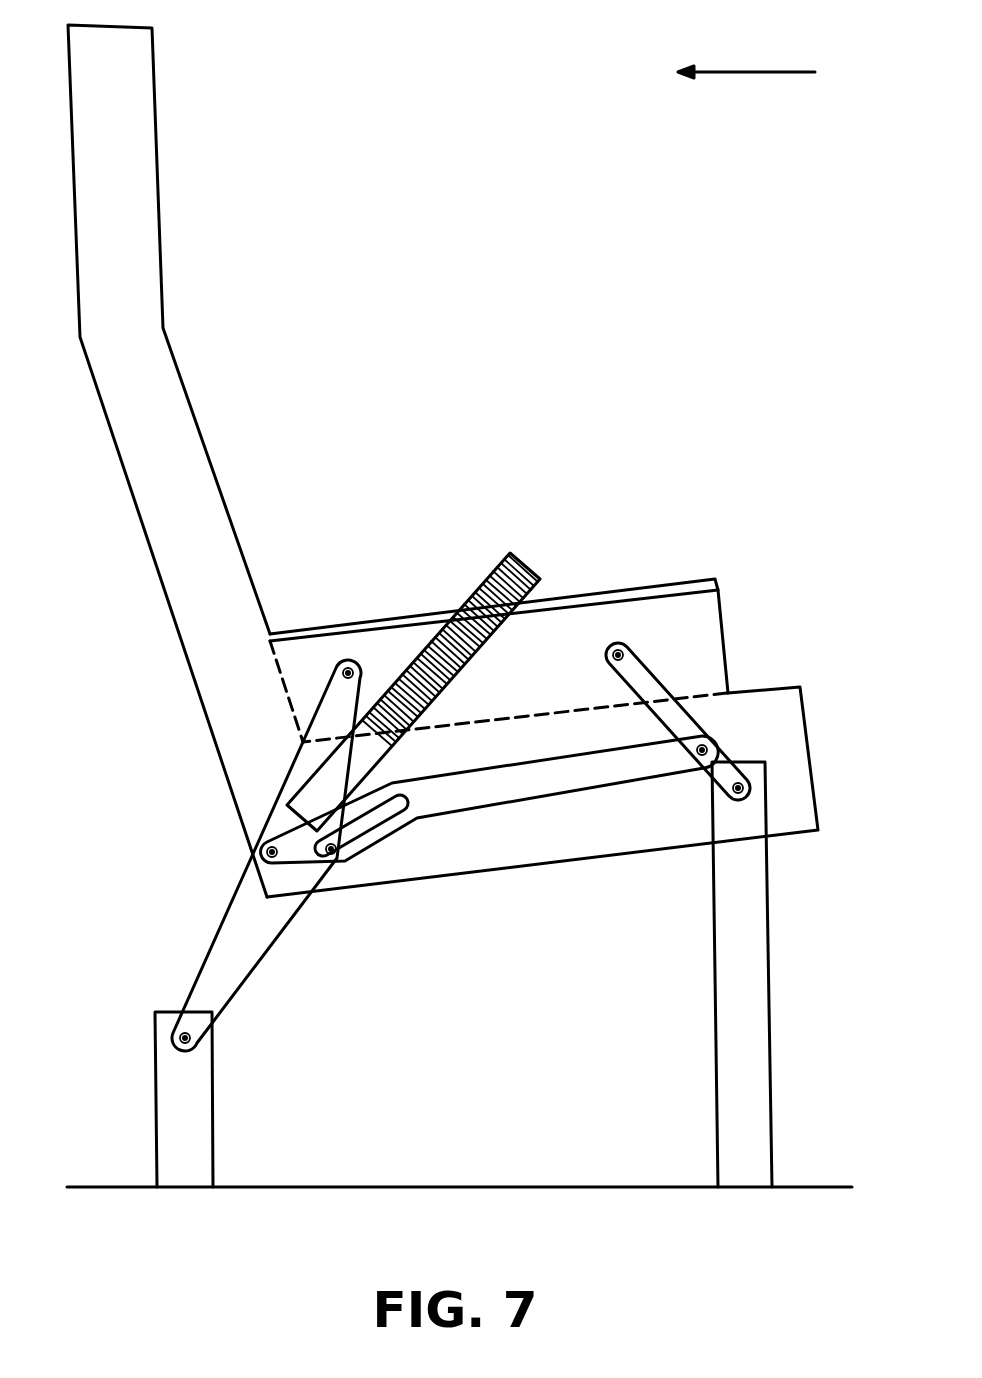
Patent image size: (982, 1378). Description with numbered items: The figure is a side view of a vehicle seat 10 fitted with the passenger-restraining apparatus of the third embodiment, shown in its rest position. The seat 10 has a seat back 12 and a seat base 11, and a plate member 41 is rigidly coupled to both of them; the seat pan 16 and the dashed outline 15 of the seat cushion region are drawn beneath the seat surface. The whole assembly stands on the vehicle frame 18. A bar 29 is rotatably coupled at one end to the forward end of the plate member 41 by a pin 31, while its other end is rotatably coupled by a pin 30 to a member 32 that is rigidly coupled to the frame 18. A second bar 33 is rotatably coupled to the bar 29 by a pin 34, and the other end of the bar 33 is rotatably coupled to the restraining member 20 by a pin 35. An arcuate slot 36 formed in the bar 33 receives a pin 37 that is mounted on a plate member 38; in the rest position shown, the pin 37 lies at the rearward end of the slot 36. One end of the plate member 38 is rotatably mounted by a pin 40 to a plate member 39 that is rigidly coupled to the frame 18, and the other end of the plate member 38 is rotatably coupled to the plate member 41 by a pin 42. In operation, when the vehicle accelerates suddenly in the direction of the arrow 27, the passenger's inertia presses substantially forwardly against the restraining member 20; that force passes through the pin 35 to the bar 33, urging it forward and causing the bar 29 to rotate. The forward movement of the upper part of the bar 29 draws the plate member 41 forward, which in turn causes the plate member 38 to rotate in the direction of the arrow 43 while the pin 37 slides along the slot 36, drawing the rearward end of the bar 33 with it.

The vehicle seat 10 is at (519, 279).
The seat base 11 is at (807, 731).
The seat back 12 is at (102, 406).
The seat cushion (hidden outline) 15 is at (467, 720).
The seat pan 16 is at (747, 692).
The vehicle frame 18 is at (273, 1188).
The restraining member 20 is at (492, 572).
The arrow 27 is at (777, 75).
The bar 29 is at (658, 687).
The pin 30 is at (733, 789).
The pin 31 is at (623, 648).
The member 32 is at (725, 1025).
The bar 33 is at (595, 770).
The pin 34 is at (707, 747).
The pin 35 is at (262, 851).
The arcuate slot 36 is at (383, 820).
The pin 37 is at (338, 862).
The plate member 38 is at (238, 922).
The plate member 39 is at (163, 1105).
The pin 40 is at (180, 1040).
The plate member 41 is at (567, 660).
The pin 42 is at (338, 670).
The arrow 43 is at (284, 998).